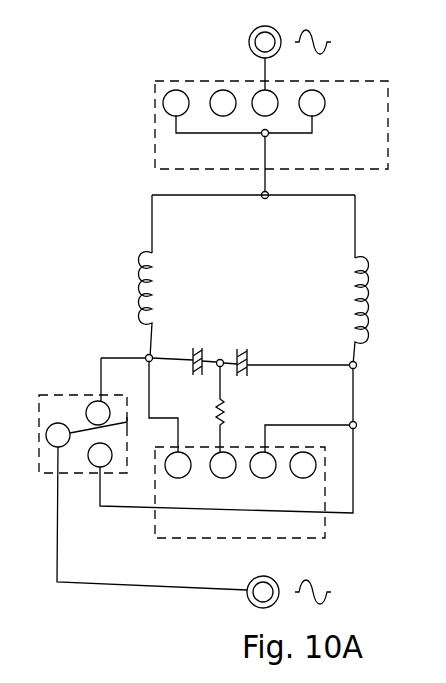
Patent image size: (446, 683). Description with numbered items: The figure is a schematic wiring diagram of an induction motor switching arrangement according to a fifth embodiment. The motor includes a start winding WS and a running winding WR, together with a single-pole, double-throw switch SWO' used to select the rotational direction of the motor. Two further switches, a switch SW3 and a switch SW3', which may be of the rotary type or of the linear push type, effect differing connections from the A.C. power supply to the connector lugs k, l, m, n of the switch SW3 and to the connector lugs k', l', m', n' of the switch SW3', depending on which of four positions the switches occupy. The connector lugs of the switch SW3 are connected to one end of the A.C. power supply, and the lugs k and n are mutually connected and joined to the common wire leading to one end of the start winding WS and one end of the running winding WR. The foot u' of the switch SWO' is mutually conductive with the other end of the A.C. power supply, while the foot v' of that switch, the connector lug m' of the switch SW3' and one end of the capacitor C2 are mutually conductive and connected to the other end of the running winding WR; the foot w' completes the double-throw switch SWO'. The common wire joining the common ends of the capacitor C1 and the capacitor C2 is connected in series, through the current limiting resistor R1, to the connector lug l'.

The switch SW3 is at (299, 136).
The switch SW3' is at (274, 496).
The single-pole, double-throw switch SWO' is at (76, 415).
The start winding WS is at (118, 276).
The running winding WR is at (381, 280).
The capacitor C1 is at (200, 347).
The capacitor C2 is at (247, 347).
The current limiting resistor R1 is at (232, 409).
The connector lug k is at (176, 103).
The connector lug l is at (223, 103).
The connector lug m is at (265, 103).
The connector lug n is at (312, 103).
The connector lug k' is at (178, 465).
The connector lug l' is at (223, 465).
The connector lug m' is at (263, 465).
The connector lug n' is at (303, 465).
The foot u' is at (100, 455).
The foot v' is at (98, 413).
The foot w' is at (58, 435).